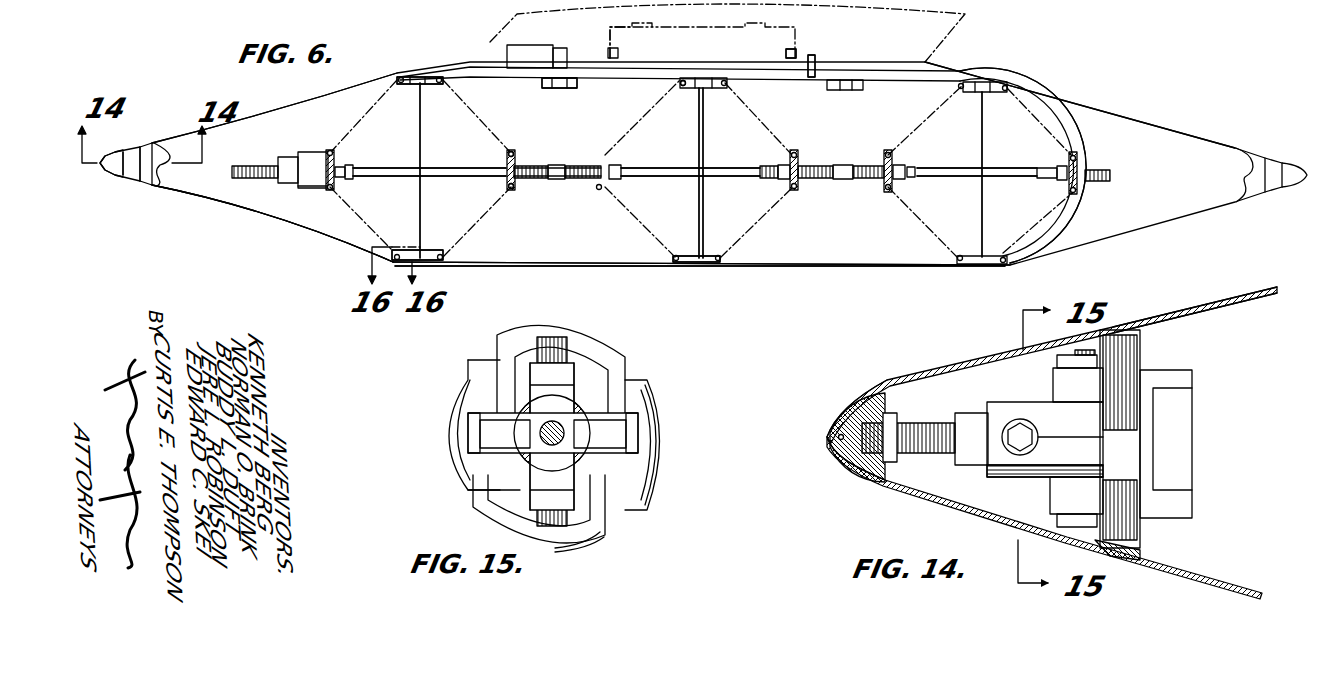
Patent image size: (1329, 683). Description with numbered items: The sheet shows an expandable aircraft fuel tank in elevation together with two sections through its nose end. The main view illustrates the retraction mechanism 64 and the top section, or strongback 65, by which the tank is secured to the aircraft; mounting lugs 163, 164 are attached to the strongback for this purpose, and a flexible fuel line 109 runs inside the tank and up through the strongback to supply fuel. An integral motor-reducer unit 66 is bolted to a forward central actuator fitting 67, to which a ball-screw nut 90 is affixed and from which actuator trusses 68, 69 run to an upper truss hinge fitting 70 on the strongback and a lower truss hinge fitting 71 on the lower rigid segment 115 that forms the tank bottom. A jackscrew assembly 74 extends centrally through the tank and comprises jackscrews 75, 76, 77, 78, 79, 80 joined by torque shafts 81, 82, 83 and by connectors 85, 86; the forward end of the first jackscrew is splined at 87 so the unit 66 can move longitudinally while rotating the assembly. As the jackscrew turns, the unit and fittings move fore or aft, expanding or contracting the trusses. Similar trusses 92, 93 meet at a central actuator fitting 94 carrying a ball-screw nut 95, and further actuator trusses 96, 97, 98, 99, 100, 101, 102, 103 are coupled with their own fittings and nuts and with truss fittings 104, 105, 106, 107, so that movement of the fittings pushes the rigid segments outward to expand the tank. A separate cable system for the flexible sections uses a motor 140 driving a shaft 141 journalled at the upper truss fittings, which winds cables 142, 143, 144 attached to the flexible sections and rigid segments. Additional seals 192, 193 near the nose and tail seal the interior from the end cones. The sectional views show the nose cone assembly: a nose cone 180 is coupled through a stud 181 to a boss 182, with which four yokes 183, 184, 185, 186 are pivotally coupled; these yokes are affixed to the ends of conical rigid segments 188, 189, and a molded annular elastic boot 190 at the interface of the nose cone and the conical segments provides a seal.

In FIG. 6, the motor 140 is at (504, 46).
In FIG. 6, the mounting lug 163 is at (624, 54).
In FIG. 6, the truss fitting 104 is at (678, 82).
In FIG. 6, the mounting lug 164 is at (790, 52).
In FIG. 6, the top section (strongback) 65 is at (948, 61).
In FIG. 6, the conical rigid segment 188 is at (158, 145).
In FIG. 14, the conical rigid segment 188 is at (1243, 300).
In FIG. 6, the molded annular elastic boot 190 is at (128, 160).
In FIG. 14, the molded annular elastic boot 190 is at (1120, 330).
In FIG. 6, the nose cone 180 is at (112, 172).
In FIG. 14, the nose cone 180 is at (940, 363).
In FIG. 6, the conical rigid segment 189 is at (175, 193).
In FIG. 14, the conical rigid segment 189 is at (1205, 580).
In FIG. 6, the additional seal 192 is at (162, 178).
In FIG. 6, the spline 87 is at (253, 172).
In FIG. 6, the retraction mechanism 64 is at (318, 200).
In FIG. 6, the jackscrew 75 is at (347, 180).
In FIG. 6, the motor-reducer unit 66 is at (307, 152).
In FIG. 6, the actuator truss 68 is at (367, 120).
In FIG. 6, the forward central actuator fitting 67 is at (334, 162).
In FIG. 6, the ball-screw nut 90 is at (345, 166).
In FIG. 6, the upper truss hinge fitting 70 is at (398, 86).
In FIG. 6, the cable 142 is at (422, 109).
In FIG. 6, the actuator truss 69 is at (353, 203).
In FIG. 6, the lower truss hinge fitting 71 is at (405, 248).
In FIG. 6, the torque shaft 81 is at (430, 167).
In FIG. 6, the actuator truss 92 is at (468, 108).
In FIG. 6, the ball-screw nut 95 is at (507, 156).
In FIG. 6, the actuator truss 93 is at (467, 230).
In FIG. 6, the central actuator fitting 94 is at (514, 151).
In FIG. 6, the shaft 141 is at (540, 89).
In FIG. 6, the jackscrew assembly 74 is at (570, 163).
In FIG. 6, the jackscrew 76 is at (530, 184).
In FIG. 6, the jackscrew 77 is at (566, 172).
In FIG. 6, the connector 85 is at (556, 180).
In FIG. 6, the actuator truss 96 is at (633, 123).
In FIG. 6, the cable 143 is at (698, 128).
In FIG. 6, the torque shaft 82 is at (680, 178).
In FIG. 6, the actuator truss 97 is at (623, 220).
In FIG. 6, the actuator truss 99 is at (750, 230).
In FIG. 6, the actuator truss 98 is at (760, 113).
In FIG. 6, the truss fitting 105 is at (798, 155).
In FIG. 6, the truss fitting 106 is at (885, 153).
In FIG. 6, the jackscrew 78 is at (817, 178).
In FIG. 6, the jackscrew 79 is at (870, 180).
In FIG. 6, the connector 86 is at (842, 181).
In FIG. 6, the actuator truss 101 is at (902, 208).
In FIG. 6, the actuator truss 100 is at (922, 122).
In FIG. 6, the torque shaft 83 is at (942, 168).
In FIG. 6, the cable 144 is at (982, 222).
In FIG. 6, the actuator truss 102 is at (1023, 118).
In FIG. 6, the truss fitting 107 is at (1071, 163).
In FIG. 6, the actuator truss 103 is at (1033, 227).
In FIG. 6, the flexible fuel line 109 is at (1087, 141).
In FIG. 6, the jackscrew 80 is at (1100, 182).
In FIG. 6, the additional seal 193 is at (1230, 173).
In FIG. 6, the lower rigid segment 115 is at (467, 264).
In FIG. 15, the yoke 186 is at (580, 336).
In FIG. 14, the yoke 186 is at (1133, 350).
In FIG. 15, the yoke 184 is at (592, 538).
In FIG. 14, the yoke 184 is at (1127, 552).
In FIG. 15, the yoke 185 is at (445, 412).
In FIG. 15, the yoke 183 is at (660, 415).
In FIG. 14, the yoke 183 is at (1183, 462).
In FIG. 15, the boss 182 is at (580, 462).
In FIG. 14, the boss 182 is at (996, 408).
In FIG. 15, the stud 181 is at (540, 445).
In FIG. 14, the stud 181 is at (920, 427).